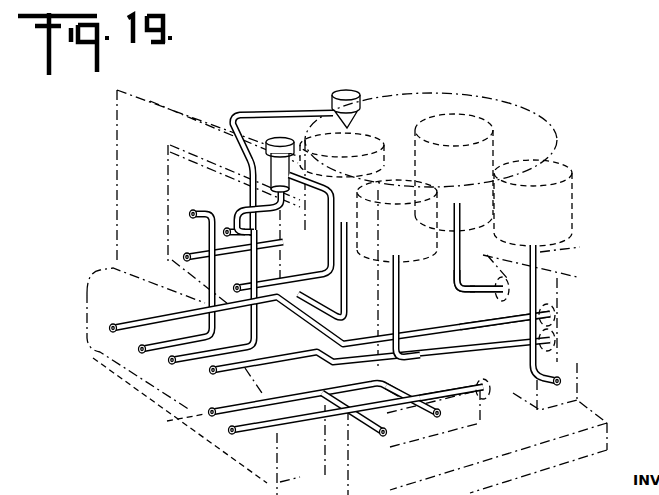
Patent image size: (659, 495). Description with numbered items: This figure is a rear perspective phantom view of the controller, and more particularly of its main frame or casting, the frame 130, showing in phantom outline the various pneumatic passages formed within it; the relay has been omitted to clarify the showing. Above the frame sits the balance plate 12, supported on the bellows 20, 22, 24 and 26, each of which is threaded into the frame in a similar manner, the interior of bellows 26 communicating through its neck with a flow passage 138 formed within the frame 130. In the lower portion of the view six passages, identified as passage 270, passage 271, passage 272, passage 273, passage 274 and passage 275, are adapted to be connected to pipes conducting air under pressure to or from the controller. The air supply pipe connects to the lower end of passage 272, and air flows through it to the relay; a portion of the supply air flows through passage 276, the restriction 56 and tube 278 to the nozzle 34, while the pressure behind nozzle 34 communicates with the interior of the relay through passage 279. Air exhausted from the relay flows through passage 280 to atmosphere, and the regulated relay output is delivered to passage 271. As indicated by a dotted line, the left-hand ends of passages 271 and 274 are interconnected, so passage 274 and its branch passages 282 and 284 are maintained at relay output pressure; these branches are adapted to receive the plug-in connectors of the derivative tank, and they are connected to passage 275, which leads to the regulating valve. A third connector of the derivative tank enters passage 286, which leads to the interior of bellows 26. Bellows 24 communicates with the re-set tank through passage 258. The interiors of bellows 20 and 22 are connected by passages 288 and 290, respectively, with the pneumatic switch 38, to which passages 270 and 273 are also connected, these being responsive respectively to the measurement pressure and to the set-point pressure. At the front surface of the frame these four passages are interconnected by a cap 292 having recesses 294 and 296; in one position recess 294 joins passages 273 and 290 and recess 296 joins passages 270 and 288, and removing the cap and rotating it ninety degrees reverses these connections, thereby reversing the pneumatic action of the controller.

The balance plate 12 is at (467, 95).
The bellows 20 is at (486, 121).
The bellows 22 is at (408, 257).
The bellows 24 is at (356, 137).
The bellows 26 is at (562, 167).
The nozzle 34 is at (346, 90).
The pneumatic switch 38 is at (563, 278).
The restriction 56 is at (275, 134).
The frame 130 is at (127, 116).
The flow passage 138 is at (556, 251).
The passage 258 is at (327, 307).
The passage 270 is at (140, 320).
The passage 271 is at (197, 208).
The passage 272 is at (200, 363).
The passage 273 is at (237, 373).
The passage 274 is at (225, 421).
The passage 275 is at (247, 432).
The passage 276 is at (226, 227).
The tube 278 is at (283, 110).
The passage 279 is at (288, 278).
The passage 280 is at (190, 252).
The branch passage 282 is at (373, 436).
The branch passage 284 is at (418, 414).
The passage 286 is at (563, 358).
The passage 288 is at (452, 294).
The passage 290 is at (498, 352).
The cap 292 is at (543, 297).
The recess 294 is at (541, 329).
The recess 296 is at (483, 266).